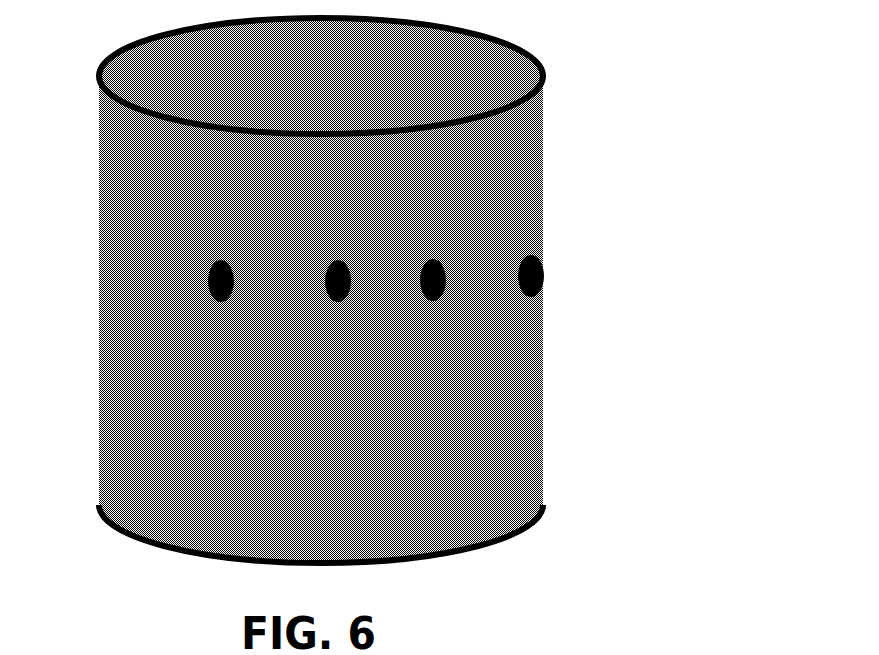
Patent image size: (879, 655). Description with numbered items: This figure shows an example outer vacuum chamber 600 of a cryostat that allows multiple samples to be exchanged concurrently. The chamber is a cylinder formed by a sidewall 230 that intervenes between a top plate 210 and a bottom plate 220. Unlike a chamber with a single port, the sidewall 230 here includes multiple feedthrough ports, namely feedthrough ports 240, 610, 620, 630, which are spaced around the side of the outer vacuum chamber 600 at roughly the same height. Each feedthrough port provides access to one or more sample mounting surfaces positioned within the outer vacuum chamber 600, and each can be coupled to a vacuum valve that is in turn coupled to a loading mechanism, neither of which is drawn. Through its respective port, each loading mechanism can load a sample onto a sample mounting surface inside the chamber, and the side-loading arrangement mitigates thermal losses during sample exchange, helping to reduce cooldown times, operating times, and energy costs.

The outer vacuum chamber 600 is at (413, 314).
The top plate 210 is at (325, 73).
The bottom plate 220 is at (147, 533).
The sidewall 230 is at (338, 405).
The feedthrough port 240 is at (512, 285).
The feedthrough port 610 is at (203, 284).
The feedthrough port 620 is at (318, 284).
The feedthrough port 630 is at (412, 287).